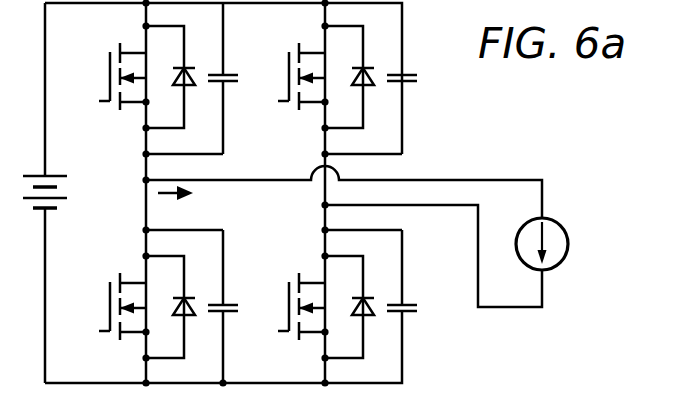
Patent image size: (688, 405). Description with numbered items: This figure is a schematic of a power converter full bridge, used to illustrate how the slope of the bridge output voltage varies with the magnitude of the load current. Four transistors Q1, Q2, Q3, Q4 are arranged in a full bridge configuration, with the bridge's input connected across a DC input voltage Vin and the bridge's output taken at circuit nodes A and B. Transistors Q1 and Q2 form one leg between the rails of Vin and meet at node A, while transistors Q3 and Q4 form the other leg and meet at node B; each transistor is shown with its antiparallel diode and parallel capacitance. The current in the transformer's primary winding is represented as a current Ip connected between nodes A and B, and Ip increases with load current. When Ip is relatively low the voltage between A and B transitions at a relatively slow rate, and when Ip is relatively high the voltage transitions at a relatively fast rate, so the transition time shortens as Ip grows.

The transistor Q1 is at (157, 88).
The transistor Q2 is at (157, 296).
The transistor Q3 is at (336, 88).
The transistor Q4 is at (336, 296).
The DC input voltage Vin is at (37, 180).
The primary winding current Ip is at (553, 244).
The circuit node A is at (331, 192).
The circuit node B is at (420, 251).